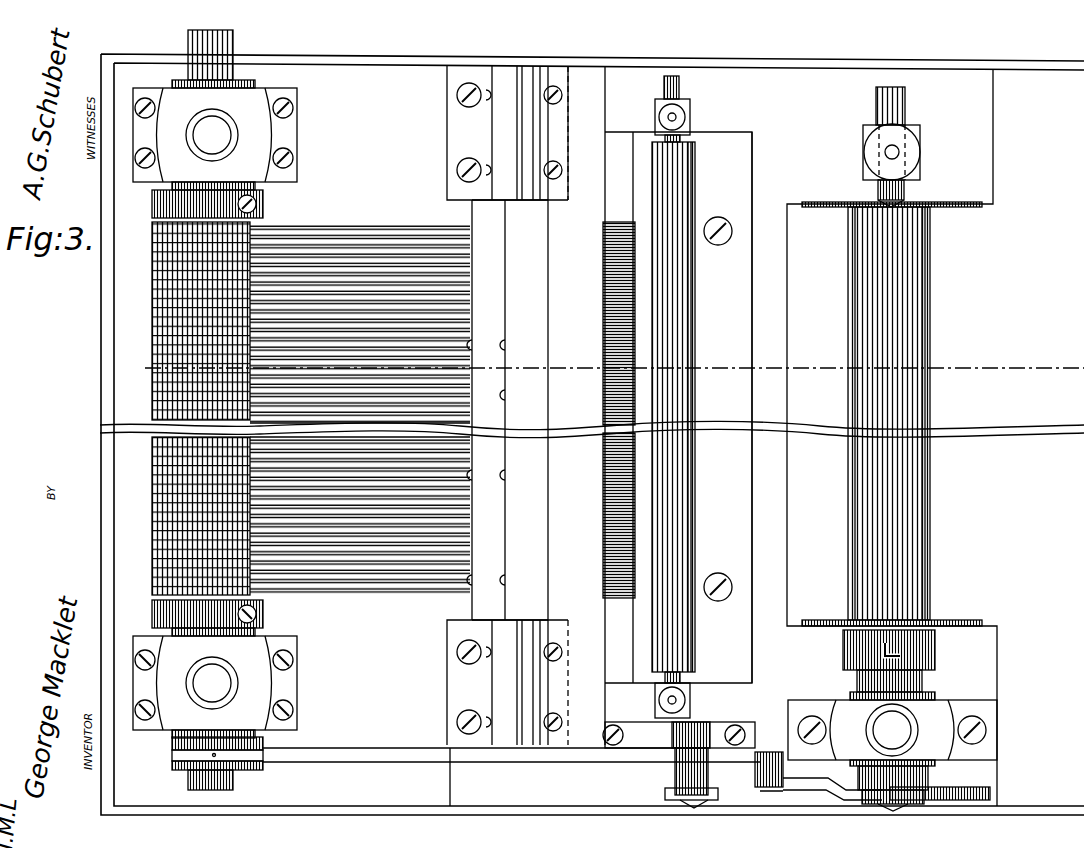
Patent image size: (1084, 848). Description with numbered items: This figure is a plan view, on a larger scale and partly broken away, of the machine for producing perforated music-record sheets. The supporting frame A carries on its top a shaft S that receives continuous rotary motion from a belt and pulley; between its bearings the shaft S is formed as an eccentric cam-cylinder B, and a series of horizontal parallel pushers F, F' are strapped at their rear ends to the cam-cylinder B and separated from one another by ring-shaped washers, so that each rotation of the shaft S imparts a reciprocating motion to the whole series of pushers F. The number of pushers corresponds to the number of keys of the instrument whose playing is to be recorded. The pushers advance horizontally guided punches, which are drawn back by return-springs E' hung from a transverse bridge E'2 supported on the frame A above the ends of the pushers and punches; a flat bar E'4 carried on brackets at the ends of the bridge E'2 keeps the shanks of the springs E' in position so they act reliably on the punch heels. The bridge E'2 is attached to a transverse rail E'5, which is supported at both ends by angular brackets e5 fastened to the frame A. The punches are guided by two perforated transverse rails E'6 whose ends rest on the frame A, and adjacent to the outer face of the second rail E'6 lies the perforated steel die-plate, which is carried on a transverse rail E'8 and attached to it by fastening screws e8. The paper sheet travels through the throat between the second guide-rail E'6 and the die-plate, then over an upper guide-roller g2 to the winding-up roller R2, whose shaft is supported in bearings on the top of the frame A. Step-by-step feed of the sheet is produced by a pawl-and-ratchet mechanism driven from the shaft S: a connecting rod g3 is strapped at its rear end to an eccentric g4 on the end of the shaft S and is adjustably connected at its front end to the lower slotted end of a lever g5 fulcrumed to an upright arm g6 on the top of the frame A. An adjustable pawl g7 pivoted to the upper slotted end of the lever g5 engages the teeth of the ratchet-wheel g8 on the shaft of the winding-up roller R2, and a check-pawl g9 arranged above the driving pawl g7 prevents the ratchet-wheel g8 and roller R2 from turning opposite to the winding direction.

The shaft S is at (220, 50).
The supporting frame A is at (145, 368).
The eccentric cam-cylinder B is at (150, 433).
The pushers F is at (311, 416).
The wire bundle F' is at (360, 434).
The return-springs E' is at (619, 411).
The transverse bridge E'2 is at (529, 410).
The flat bar E'4 is at (526, 405).
The transverse rail E'5 is at (507, 410).
The guide-rails E'6 is at (654, 397).
The transverse rail E'8 is at (692, 407).
The angular brackets e5 is at (473, 408).
The fastening screws e8 is at (719, 216).
The upper guide-roller g2 is at (729, 407).
The connecting rod g3 is at (175, 756).
The eccentric g4 is at (190, 766).
The lever g5 is at (676, 770).
The upright arm g6 is at (712, 733).
The adjustable pawl g7 is at (760, 786).
The ratchet-wheel g8 is at (962, 792).
The check-pawl g9 is at (832, 786).
The winding-up roller R2 is at (907, 318).